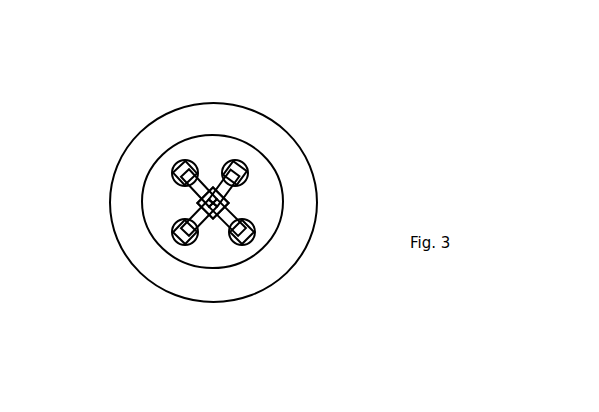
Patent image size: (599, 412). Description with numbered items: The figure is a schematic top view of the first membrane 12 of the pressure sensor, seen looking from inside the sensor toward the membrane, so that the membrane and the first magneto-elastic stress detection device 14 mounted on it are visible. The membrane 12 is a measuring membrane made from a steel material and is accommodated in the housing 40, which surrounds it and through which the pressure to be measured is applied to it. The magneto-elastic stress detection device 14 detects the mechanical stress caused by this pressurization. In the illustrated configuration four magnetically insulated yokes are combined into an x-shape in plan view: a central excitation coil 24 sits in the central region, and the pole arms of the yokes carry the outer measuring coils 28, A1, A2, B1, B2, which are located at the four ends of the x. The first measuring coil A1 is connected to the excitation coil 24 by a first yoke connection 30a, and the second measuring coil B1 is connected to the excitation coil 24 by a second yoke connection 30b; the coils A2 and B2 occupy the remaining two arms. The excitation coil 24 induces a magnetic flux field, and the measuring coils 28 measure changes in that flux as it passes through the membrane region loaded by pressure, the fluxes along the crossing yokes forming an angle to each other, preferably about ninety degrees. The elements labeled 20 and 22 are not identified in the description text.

The first membrane 12 is at (206, 252).
The first magneto-elastic stress detection device 14 is at (219, 203).
The central hub 20 is at (222, 197).
The pins 22 is at (193, 125).
The excitation coil 24 is at (205, 205).
The measuring coils 28 is at (121, 135).
The first yoke connection 30a is at (186, 190).
The second yoke connection 30b is at (200, 218).
The housing 40 is at (300, 258).
The first measuring coil A1 is at (172, 173).
The measuring coil A2 is at (252, 240).
The second measuring coil B1 is at (242, 167).
The measuring coil B2 is at (175, 242).